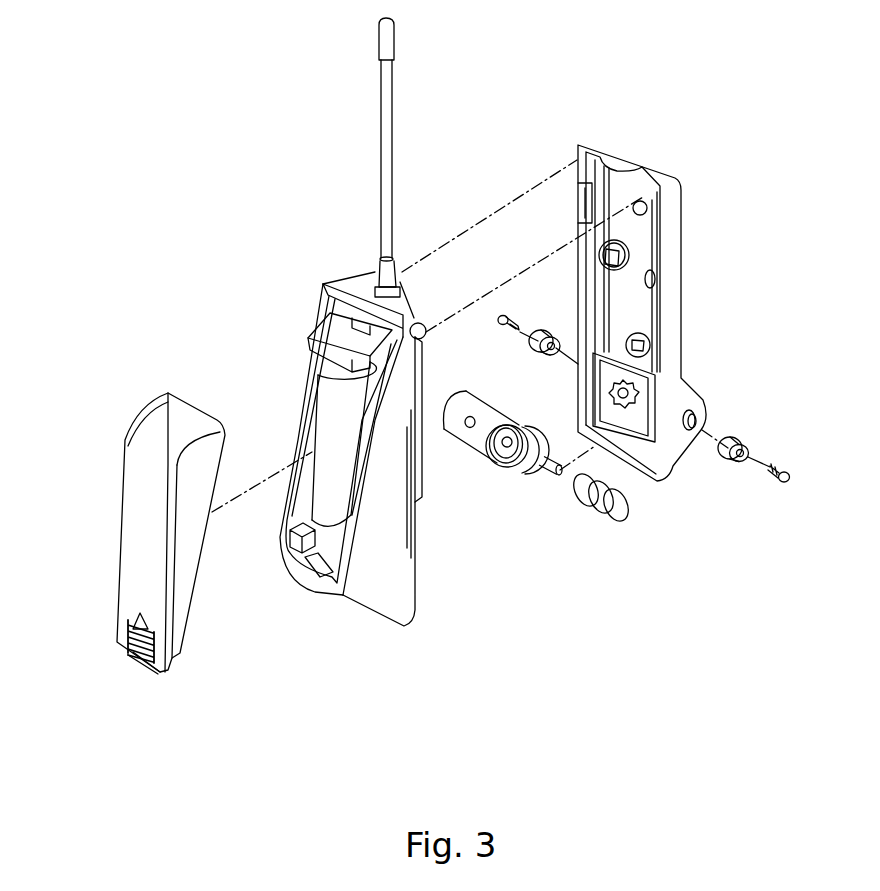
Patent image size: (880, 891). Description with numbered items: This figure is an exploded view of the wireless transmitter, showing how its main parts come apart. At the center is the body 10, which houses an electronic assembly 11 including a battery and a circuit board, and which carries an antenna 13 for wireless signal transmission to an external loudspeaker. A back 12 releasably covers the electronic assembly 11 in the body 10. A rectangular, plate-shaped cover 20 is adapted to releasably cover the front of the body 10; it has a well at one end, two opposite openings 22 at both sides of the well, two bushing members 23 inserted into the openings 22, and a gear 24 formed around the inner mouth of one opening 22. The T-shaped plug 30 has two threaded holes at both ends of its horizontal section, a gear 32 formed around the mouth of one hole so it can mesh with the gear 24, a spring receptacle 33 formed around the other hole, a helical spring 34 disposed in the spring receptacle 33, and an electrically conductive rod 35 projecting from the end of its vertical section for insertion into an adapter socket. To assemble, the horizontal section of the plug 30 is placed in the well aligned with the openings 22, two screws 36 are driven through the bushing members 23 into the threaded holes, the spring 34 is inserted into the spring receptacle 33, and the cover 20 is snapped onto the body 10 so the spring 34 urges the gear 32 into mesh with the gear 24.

The body 10 is at (345, 290).
The electronic assembly 11 is at (326, 380).
The back 12 is at (133, 514).
The antenna 13 is at (390, 128).
The cover 20 is at (680, 272).
The openings 22 is at (704, 424).
The bushing members 23 is at (733, 464).
The gear 24 is at (608, 403).
The plug 30 is at (519, 470).
The gear 32 is at (452, 395).
The spring receptacle 33 is at (496, 460).
The helical spring 34 is at (597, 510).
The electrically conductive rod 35 is at (553, 474).
The screws 36 is at (789, 469).